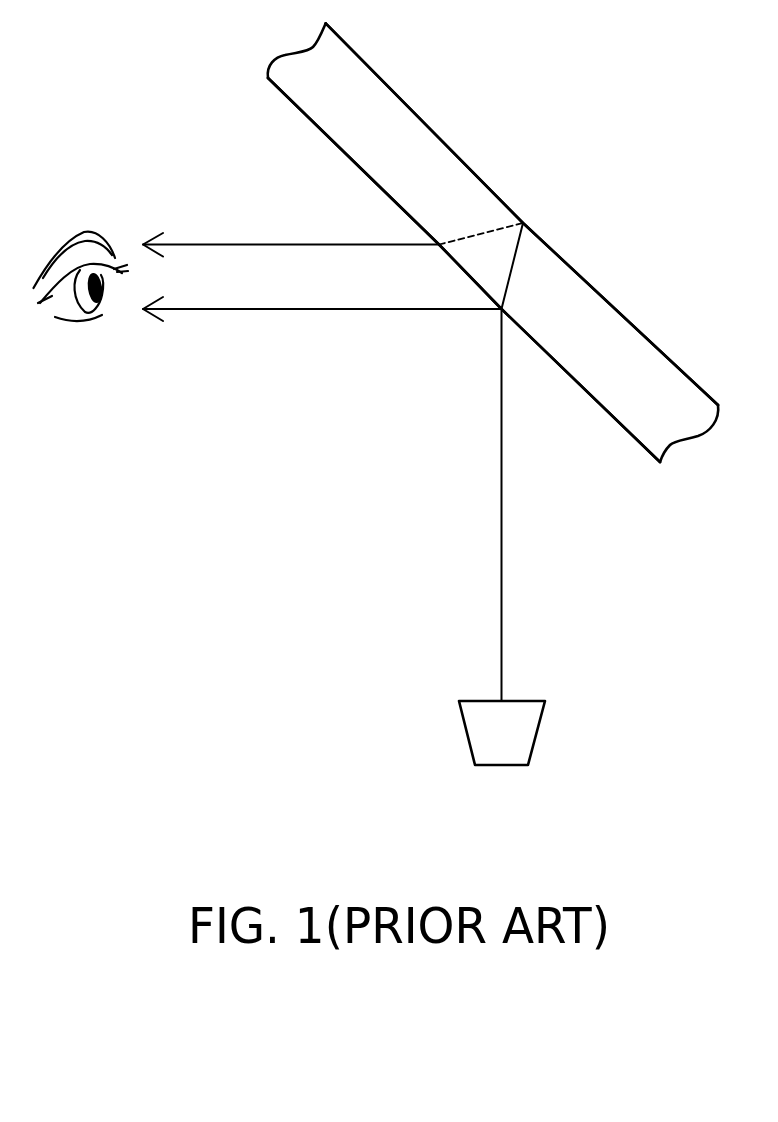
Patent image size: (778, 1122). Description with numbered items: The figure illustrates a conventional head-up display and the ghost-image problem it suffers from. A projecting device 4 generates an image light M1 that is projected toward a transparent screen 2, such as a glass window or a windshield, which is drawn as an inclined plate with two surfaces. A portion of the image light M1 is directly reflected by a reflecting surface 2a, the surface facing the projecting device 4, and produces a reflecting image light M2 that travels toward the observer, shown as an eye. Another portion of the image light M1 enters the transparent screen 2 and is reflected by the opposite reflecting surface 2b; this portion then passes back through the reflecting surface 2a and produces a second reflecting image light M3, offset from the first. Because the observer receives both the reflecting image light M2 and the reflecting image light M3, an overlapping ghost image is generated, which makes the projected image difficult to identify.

The transparent screen 2 is at (582, 288).
The reflecting surface 2a is at (632, 435).
The reflecting surface 2b is at (635, 322).
The projecting device 4 is at (538, 730).
The image light M1 is at (529, 504).
The reflecting image light M2 is at (322, 299).
The reflecting image light M3 is at (291, 235).